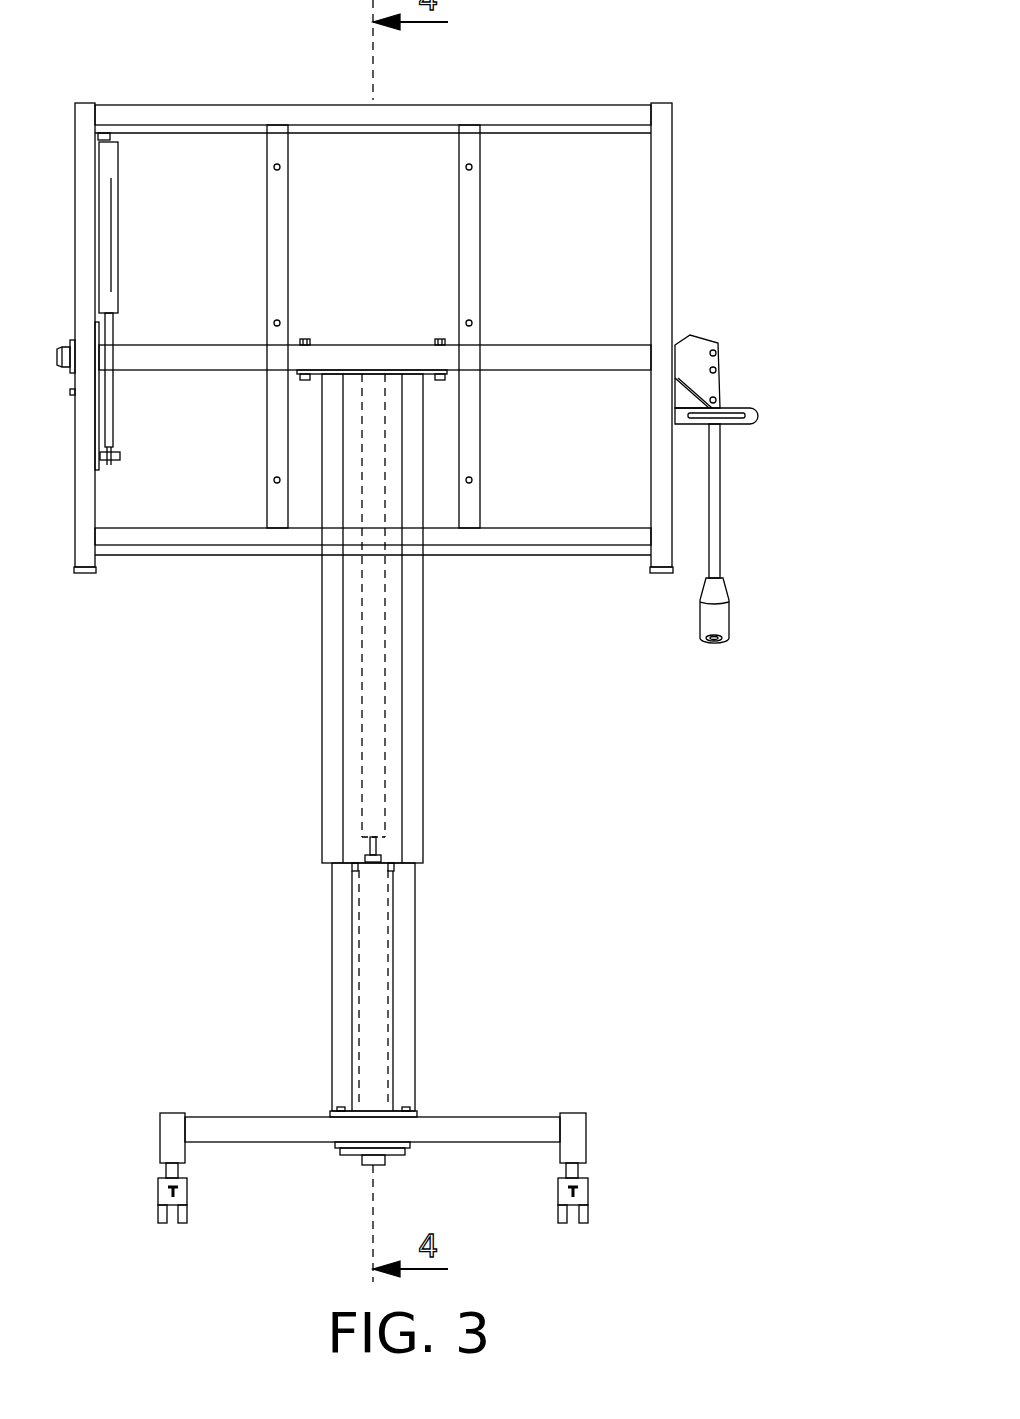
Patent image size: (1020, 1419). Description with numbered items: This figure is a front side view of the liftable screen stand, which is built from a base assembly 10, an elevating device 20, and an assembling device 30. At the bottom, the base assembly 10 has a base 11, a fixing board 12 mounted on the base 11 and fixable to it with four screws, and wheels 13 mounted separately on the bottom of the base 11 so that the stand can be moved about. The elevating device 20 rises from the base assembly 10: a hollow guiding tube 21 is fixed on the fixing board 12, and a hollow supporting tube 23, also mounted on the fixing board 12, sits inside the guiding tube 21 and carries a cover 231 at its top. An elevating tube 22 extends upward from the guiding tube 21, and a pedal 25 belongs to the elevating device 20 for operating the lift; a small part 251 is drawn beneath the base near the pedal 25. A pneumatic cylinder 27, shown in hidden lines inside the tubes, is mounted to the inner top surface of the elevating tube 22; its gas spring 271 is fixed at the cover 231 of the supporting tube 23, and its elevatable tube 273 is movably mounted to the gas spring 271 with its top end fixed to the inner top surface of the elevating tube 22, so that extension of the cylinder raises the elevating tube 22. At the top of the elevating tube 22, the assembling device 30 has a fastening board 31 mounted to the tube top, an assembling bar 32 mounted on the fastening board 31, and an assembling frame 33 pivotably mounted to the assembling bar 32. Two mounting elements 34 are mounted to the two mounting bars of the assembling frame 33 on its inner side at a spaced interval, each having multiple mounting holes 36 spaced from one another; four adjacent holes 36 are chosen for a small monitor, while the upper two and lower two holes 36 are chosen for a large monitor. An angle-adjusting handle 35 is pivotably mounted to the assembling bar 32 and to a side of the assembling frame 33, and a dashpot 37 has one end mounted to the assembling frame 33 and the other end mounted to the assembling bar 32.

The base assembly 10 is at (238, 1100).
The base 11 is at (510, 1128).
The fixing board 12 is at (378, 1117).
The wheels 13 is at (583, 1212).
The elevating device 20 is at (300, 788).
The guiding tube 21 is at (400, 978).
The elevating tube 22 is at (413, 780).
The supporting tube 23 is at (370, 918).
The cover 231 is at (385, 858).
The pedal 25 is at (405, 1160).
The bearing seat 251 is at (355, 1152).
The pneumatic cylinder 27 is at (352, 679).
The gas spring 271 is at (365, 851).
The elevatable tube 273 is at (373, 627).
The assembling device 30 is at (571, 92).
The fastening board 31 is at (384, 372).
The assembling bar 32 is at (540, 355).
The assembling frame 33 is at (662, 225).
The mounting elements 34 is at (468, 222).
The angle-adjusting handle 35 is at (718, 620).
The mounting holes 36 is at (468, 168).
The dashpot 37 is at (107, 233).